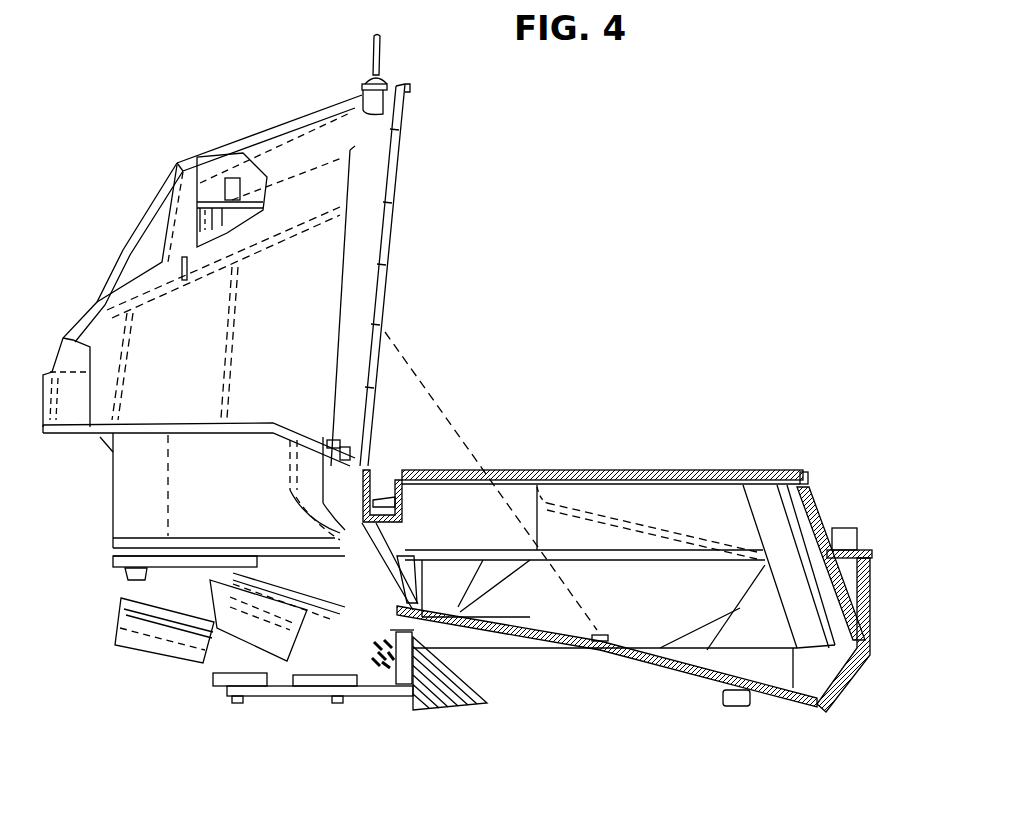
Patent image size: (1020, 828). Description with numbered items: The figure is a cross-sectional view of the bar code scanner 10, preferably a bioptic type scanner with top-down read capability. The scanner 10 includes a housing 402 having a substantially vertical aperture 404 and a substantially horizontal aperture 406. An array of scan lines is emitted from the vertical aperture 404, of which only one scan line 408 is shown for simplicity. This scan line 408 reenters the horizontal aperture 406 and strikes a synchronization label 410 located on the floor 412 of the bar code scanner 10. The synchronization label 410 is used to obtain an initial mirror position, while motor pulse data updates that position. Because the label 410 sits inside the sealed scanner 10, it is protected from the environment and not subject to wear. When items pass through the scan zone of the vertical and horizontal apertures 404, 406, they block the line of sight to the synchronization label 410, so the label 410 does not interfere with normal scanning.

The bar code scanner 10 is at (725, 137).
The housing 402 is at (197, 158).
The vertical aperture 404 is at (395, 176).
The horizontal aperture 406 is at (673, 470).
The scan line 408 is at (437, 403).
The synchronization label 410 is at (603, 634).
The floor 412 is at (660, 648).